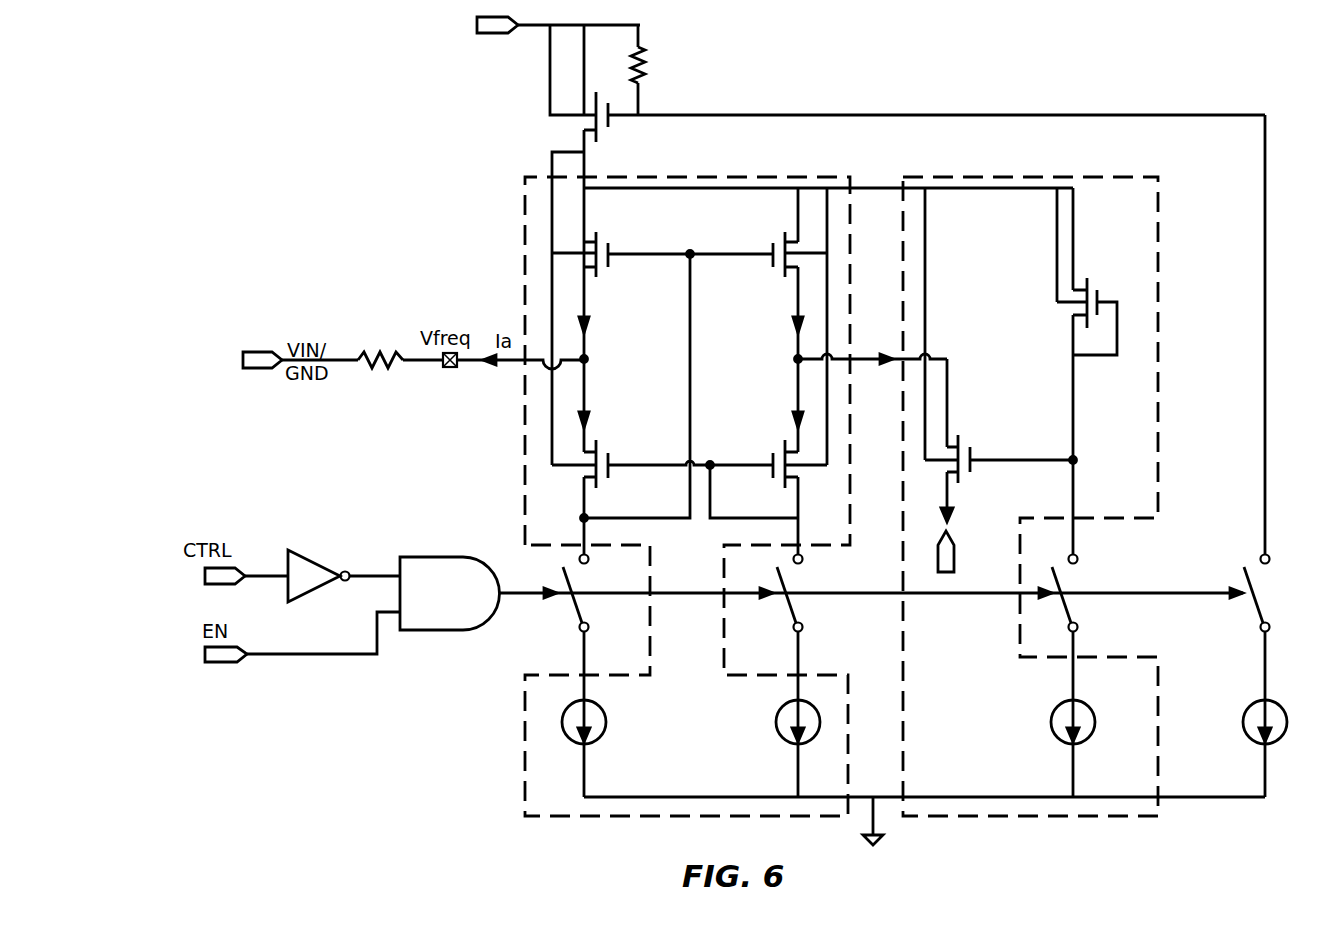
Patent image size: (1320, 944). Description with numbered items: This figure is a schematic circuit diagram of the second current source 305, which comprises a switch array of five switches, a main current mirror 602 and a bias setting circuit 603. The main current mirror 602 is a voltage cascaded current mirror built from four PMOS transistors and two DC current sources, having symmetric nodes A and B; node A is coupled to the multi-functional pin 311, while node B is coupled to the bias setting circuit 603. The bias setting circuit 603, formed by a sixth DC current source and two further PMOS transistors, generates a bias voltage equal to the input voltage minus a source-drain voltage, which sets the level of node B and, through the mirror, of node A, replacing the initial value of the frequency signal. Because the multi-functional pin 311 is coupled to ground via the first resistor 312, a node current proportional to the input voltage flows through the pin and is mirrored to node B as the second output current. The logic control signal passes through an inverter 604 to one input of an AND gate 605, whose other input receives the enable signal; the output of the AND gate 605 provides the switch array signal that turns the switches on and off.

The second current source 305 is at (895, 52).
The multi-functional pin 311 is at (450, 368).
The first resistor 312 is at (378, 347).
The main current mirror 602 is at (525, 245).
The bias setting circuit 603 is at (1160, 258).
The inverter 604 is at (310, 532).
The AND gate 605 is at (437, 557).